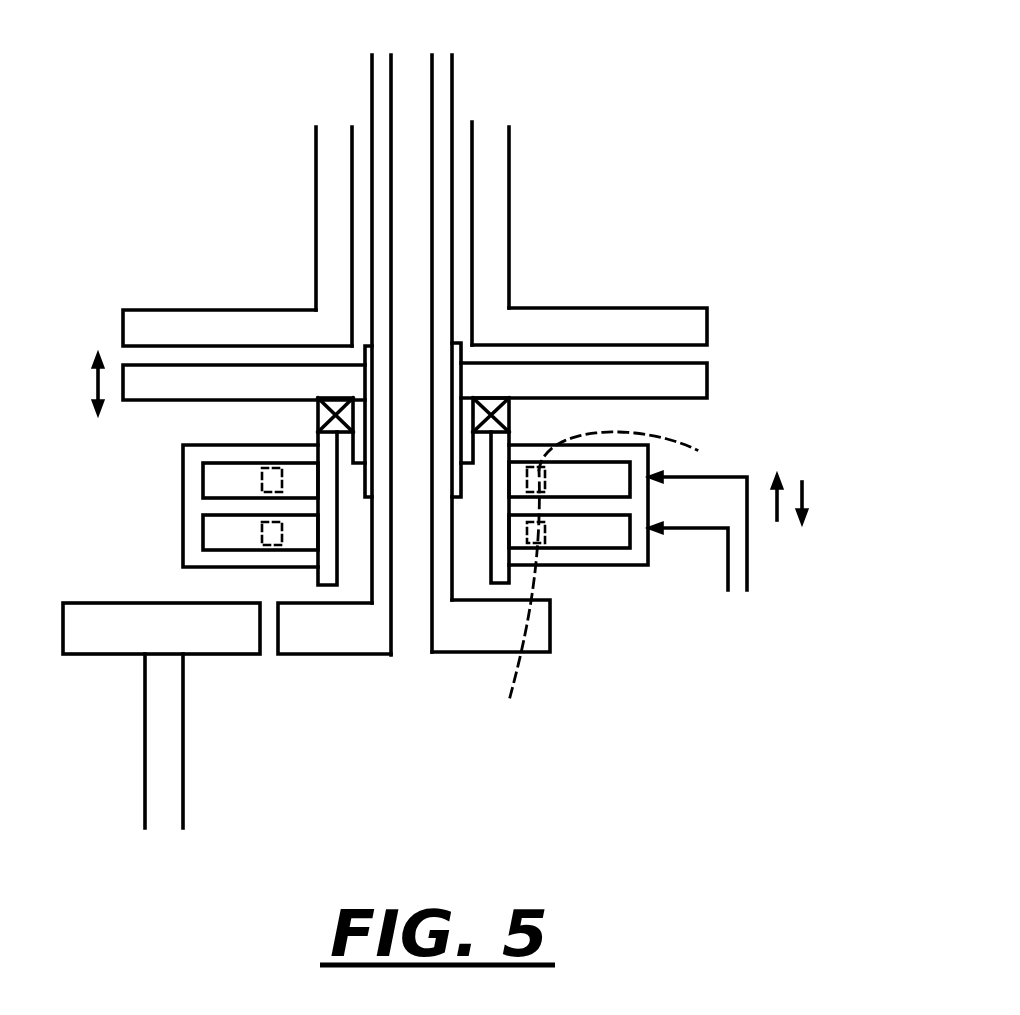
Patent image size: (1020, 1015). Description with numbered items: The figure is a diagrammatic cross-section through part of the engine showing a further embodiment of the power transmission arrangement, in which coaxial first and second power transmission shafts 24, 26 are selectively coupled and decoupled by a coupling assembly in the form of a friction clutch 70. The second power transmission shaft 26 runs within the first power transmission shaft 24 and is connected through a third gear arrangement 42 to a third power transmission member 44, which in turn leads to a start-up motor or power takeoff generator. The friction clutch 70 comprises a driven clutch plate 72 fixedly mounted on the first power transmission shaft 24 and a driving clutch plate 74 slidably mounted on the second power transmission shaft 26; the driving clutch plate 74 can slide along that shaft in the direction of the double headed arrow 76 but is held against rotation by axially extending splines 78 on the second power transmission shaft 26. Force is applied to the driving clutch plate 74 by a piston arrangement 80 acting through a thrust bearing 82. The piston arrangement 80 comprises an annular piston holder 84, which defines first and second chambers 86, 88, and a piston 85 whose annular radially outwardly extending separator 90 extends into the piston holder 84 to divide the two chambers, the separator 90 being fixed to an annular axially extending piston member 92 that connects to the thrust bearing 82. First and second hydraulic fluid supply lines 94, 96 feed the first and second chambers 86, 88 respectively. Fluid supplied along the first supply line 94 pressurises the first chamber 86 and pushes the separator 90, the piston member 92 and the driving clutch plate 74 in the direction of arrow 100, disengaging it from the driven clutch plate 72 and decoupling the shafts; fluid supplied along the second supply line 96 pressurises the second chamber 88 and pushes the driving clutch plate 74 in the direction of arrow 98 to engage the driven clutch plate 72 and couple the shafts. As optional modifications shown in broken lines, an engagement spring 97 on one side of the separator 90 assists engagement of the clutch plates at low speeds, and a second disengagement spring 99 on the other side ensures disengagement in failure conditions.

The first power transmission shaft 24 is at (314, 182).
The second power transmission shaft 26 is at (452, 107).
The third gear arrangement 42 is at (272, 668).
The third power transmission member 44 is at (157, 768).
The friction clutch 70 is at (605, 302).
The driven clutch plate 72 is at (197, 322).
The driving clutch plate 74 is at (688, 383).
The double headed arrow 76 is at (95, 383).
The axially extending splines 78 is at (365, 375).
The piston arrangement 80 is at (593, 560).
The thrust bearing 82 is at (510, 418).
The annular piston holder 84 is at (190, 512).
The piston 85 is at (483, 550).
The first chamber 86 is at (220, 487).
The second chamber 88 is at (217, 535).
The separator 90 is at (570, 507).
The piston member 92 is at (333, 542).
The first hydraulic fluid supply line 94 is at (752, 560).
The second hydraulic fluid supply line 96 is at (727, 565).
The engagement spring 97 is at (530, 597).
The arrow 98 is at (777, 520).
The second disengagement spring 99 is at (635, 451).
The arrow 100 is at (803, 492).